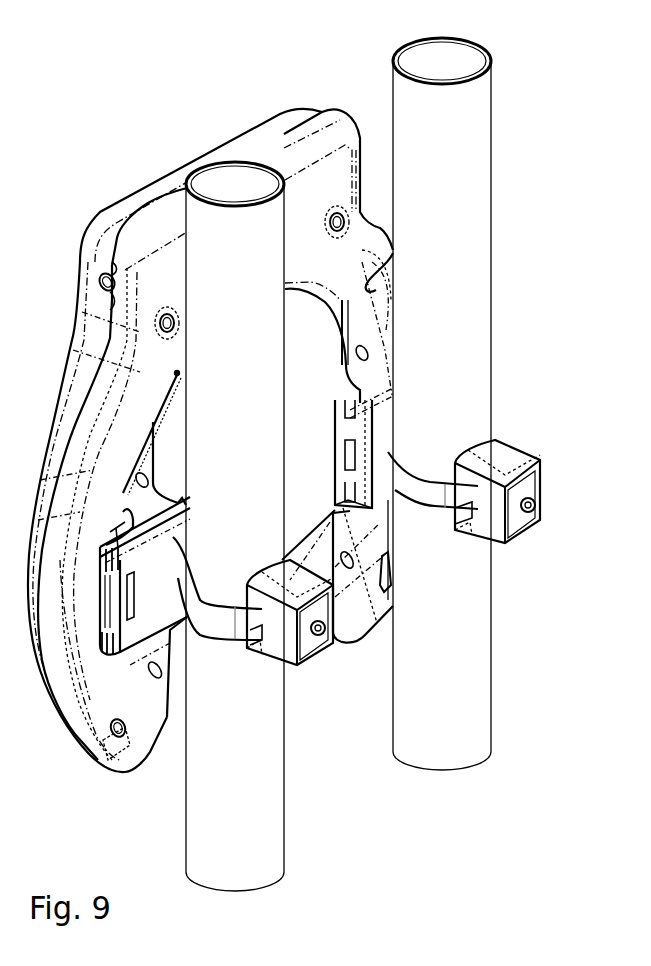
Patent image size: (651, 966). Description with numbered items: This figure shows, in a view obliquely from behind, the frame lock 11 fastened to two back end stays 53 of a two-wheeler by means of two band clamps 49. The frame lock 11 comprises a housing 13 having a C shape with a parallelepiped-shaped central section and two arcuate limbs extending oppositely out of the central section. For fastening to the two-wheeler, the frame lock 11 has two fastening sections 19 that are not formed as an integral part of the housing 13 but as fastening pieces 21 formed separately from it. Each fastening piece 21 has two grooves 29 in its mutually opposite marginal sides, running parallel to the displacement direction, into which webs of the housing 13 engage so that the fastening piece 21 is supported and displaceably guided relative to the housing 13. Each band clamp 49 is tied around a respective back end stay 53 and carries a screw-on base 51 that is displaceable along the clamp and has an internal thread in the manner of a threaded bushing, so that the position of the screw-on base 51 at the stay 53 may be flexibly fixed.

The frame lock 11 is at (284, 418).
The housing 13 is at (314, 146).
The fastening section 19 is at (167, 478).
The fastening piece 21 is at (147, 637).
The groove 29 is at (122, 530).
The band clamp 49 is at (216, 620).
The screw-on base 51 is at (180, 566).
The back end stay 53 is at (265, 823).